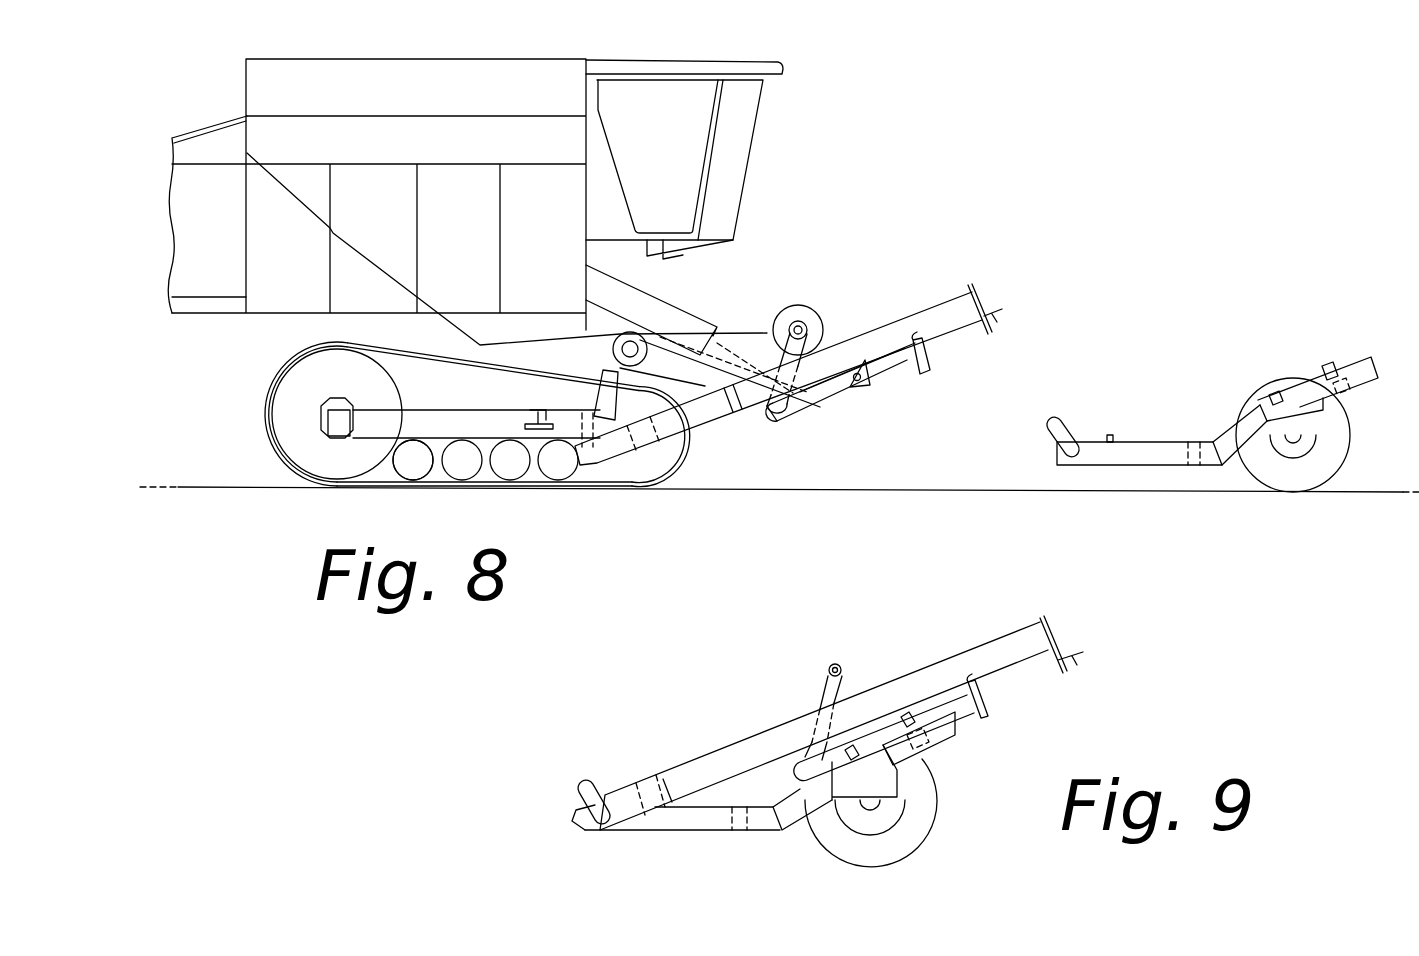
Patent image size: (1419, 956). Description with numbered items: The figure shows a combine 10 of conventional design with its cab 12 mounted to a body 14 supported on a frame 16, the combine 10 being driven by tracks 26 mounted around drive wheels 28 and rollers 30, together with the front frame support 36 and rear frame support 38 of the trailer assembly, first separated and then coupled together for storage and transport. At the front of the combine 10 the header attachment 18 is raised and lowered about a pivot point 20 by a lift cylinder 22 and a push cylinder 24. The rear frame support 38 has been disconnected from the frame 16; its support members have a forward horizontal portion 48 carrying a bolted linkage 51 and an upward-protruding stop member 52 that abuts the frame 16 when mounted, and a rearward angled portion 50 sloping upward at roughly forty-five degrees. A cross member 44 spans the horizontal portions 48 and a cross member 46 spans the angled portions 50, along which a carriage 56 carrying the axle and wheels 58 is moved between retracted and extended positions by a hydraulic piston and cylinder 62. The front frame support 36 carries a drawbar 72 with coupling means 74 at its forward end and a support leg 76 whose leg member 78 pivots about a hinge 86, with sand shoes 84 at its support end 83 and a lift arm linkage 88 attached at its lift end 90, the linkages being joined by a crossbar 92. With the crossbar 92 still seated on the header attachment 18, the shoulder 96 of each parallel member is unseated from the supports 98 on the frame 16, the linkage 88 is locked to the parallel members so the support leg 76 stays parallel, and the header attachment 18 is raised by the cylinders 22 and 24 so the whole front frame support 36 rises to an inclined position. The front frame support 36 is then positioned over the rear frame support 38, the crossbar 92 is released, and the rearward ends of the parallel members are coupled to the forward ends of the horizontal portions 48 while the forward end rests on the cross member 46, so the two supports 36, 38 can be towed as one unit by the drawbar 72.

In FIG. 8, the combine 10 is at (883, 57).
In FIG. 8, the cab 12 is at (747, 104).
In FIG. 8, the body 14 is at (315, 68).
In FIG. 8, the frame 16 is at (443, 420).
In FIG. 8, the header attachment 18 is at (823, 330).
In FIG. 8, the pivot point 20 is at (612, 349).
In FIG. 8, the lift cylinder 22 is at (651, 305).
In FIG. 8, the push cylinder 24 is at (704, 431).
In FIG. 8, the tracks 26 is at (480, 483).
In FIG. 8, the drive wheels 28 is at (280, 436).
In FIG. 8, the rollers 30 is at (410, 467).
In FIG. 8, the front frame support 36 is at (807, 355).
In FIG. 9, the front frame support 36 is at (860, 710).
In FIG. 8, the rear frame support 38 is at (1213, 462).
In FIG. 9, the rear frame support 38 is at (687, 825).
In FIG. 8, the cross member 44 is at (1193, 442).
In FIG. 9, the cross member 44 is at (740, 823).
In FIG. 8, the cross member 46 is at (1345, 380).
In FIG. 9, the cross member 46 is at (927, 740).
In FIG. 8, the horizontal portion 48 is at (1128, 460).
In FIG. 9, the horizontal portion 48 is at (643, 825).
In FIG. 8, the angled portion 50 is at (1360, 378).
In FIG. 9, the angled portion 50 is at (955, 733).
In FIG. 8, the linkage 51 is at (1052, 435).
In FIG. 9, the linkage 51 is at (593, 790).
In FIG. 8, the stop member 52 is at (1110, 435).
In FIG. 8, the carriage 56 is at (1317, 427).
In FIG. 9, the carriage 56 is at (890, 787).
In FIG. 8, the wheels 58 is at (1297, 482).
In FIG. 9, the wheels 58 is at (903, 838).
In FIG. 8, the hydraulic piston and cylinder 62 is at (1310, 370).
In FIG. 8, the drawbar 72 is at (927, 315).
In FIG. 9, the drawbar 72 is at (993, 650).
In FIG. 8, the coupling means 74 is at (997, 318).
In FIG. 9, the coupling means 74 is at (1073, 663).
In FIG. 8, the support leg 76 is at (840, 393).
In FIG. 9, the leg member 78 is at (854, 699).
In FIG. 8, the support end 83 is at (898, 368).
In FIG. 8, the sand shoes 84 is at (930, 357).
In FIG. 9, the sand shoes 84 is at (990, 707).
In FIG. 8, the hinge 86 is at (860, 383).
In FIG. 8, the lift arm linkage 88 is at (768, 328).
In FIG. 9, the lift arm linkage 88 is at (826, 689).
In FIG. 8, the lift end 90 is at (777, 423).
In FIG. 9, the crossbar 92 is at (836, 665).
In FIG. 8, the lower facing shoulder 96 is at (577, 460).
In FIG. 8, the support 98 is at (528, 415).